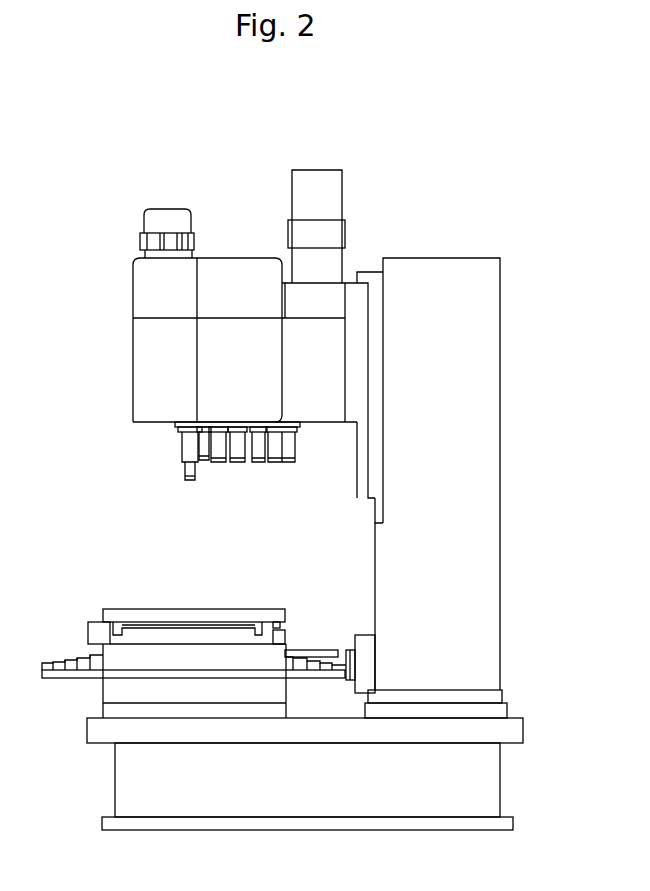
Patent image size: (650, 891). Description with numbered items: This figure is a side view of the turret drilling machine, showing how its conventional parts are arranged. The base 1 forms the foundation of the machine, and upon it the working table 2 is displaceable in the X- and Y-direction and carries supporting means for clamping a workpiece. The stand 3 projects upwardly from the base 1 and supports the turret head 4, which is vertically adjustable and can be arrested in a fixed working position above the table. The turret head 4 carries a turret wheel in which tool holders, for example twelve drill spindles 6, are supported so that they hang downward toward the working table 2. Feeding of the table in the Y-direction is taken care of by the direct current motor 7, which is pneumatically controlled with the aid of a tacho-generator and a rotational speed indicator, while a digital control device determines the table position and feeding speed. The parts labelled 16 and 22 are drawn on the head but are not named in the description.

The base 1 is at (485, 782).
The working table 2 is at (131, 608).
The stand 3 is at (477, 522).
The turret head 4 is at (148, 367).
The drill spindles 6 is at (185, 422).
The direct current motor 7 is at (367, 645).
The cap 16 is at (184, 218).
The spindle shaft 22 is at (330, 225).